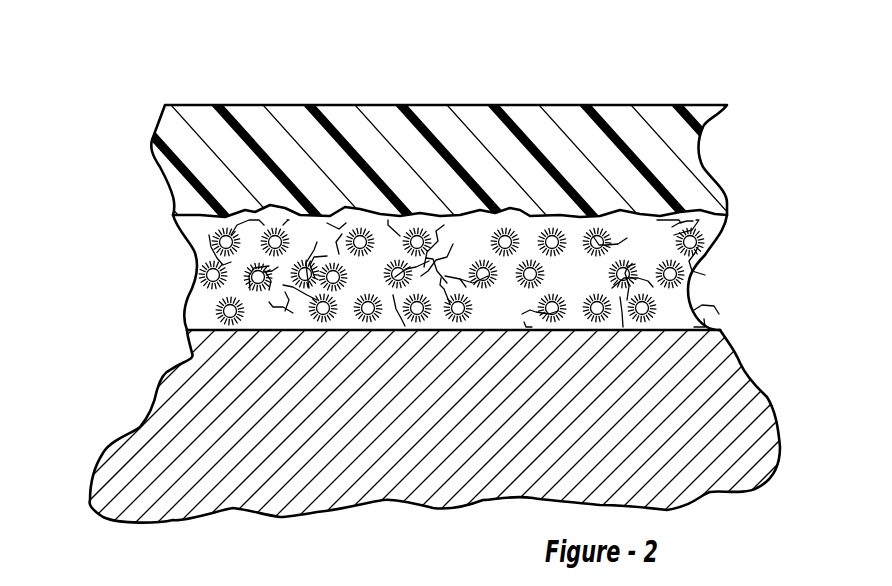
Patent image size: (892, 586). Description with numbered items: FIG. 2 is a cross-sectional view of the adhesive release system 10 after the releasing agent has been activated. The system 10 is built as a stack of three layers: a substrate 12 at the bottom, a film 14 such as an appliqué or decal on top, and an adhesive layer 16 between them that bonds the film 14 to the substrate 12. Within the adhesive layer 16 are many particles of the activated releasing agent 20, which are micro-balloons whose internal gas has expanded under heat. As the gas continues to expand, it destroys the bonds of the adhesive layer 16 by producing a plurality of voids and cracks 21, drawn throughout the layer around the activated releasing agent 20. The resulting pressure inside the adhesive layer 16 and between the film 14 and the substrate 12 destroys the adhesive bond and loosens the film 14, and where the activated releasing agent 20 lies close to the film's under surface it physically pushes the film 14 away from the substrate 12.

The adhesive release system 10 is at (446, 296).
The substrate 12 is at (165, 437).
The film 14 is at (230, 133).
The adhesive layer 16 is at (188, 268).
The activated releasing agent 20 is at (670, 273).
The cracks 21 is at (490, 282).